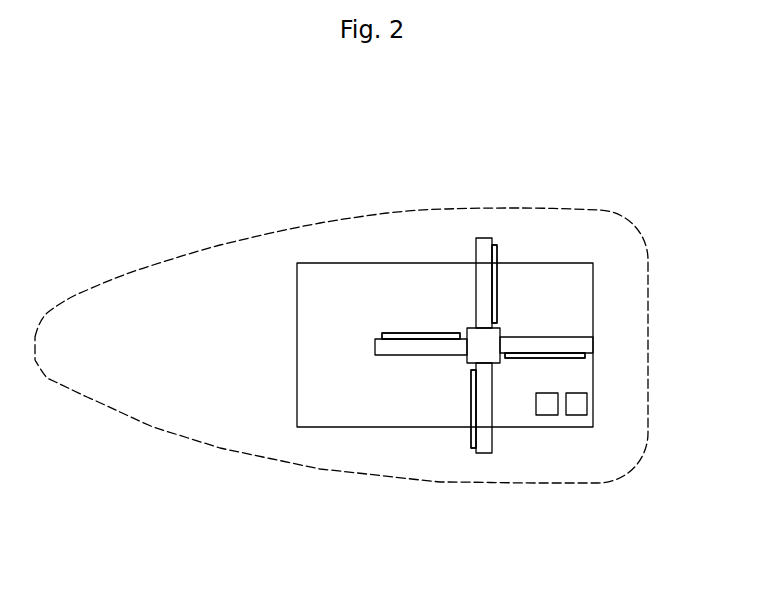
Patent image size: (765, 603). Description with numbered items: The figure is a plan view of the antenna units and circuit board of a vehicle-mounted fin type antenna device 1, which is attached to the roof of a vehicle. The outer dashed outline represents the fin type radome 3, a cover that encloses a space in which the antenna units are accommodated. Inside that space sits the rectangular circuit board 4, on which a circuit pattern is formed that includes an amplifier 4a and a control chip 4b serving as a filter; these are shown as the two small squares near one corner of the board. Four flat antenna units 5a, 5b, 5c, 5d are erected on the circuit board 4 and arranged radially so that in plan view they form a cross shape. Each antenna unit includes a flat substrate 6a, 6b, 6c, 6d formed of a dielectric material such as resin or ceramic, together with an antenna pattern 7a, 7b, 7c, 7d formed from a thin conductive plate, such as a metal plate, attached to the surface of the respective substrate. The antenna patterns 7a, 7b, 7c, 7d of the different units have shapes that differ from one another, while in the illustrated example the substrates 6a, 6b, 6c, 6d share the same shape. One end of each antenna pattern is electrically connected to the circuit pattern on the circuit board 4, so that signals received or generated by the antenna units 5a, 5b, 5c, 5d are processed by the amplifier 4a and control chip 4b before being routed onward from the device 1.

The vehicle-mounted fin type antenna device 1 is at (287, 185).
The fin type radome 3 is at (575, 210).
The circuit board 4 is at (332, 287).
The amplifier 4a is at (545, 410).
The control chip 4b is at (577, 410).
The antenna unit 5a is at (423, 356).
The antenna unit 5b is at (483, 237).
The antenna unit 5c is at (560, 337).
The antenna unit 5d is at (486, 454).
The substrate 6a is at (392, 351).
The substrate 6b is at (482, 304).
The substrate 6c is at (543, 343).
The substrate 6d is at (485, 400).
The antenna pattern 7a is at (412, 333).
The antenna pattern 7b is at (495, 288).
The antenna pattern 7c is at (558, 358).
The antenna pattern 7d is at (473, 398).